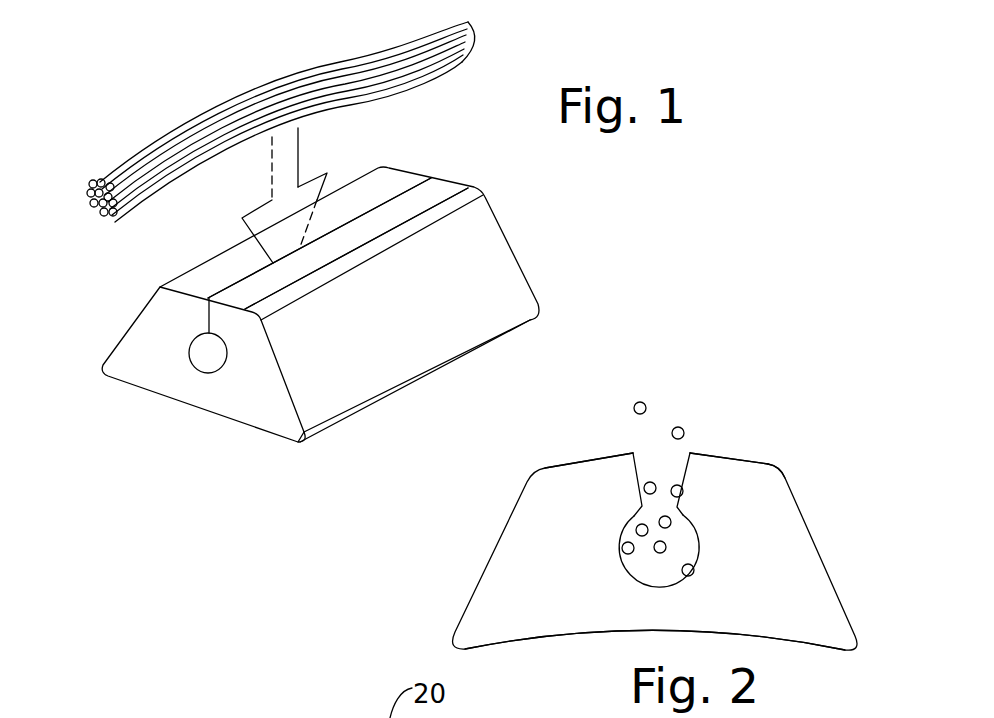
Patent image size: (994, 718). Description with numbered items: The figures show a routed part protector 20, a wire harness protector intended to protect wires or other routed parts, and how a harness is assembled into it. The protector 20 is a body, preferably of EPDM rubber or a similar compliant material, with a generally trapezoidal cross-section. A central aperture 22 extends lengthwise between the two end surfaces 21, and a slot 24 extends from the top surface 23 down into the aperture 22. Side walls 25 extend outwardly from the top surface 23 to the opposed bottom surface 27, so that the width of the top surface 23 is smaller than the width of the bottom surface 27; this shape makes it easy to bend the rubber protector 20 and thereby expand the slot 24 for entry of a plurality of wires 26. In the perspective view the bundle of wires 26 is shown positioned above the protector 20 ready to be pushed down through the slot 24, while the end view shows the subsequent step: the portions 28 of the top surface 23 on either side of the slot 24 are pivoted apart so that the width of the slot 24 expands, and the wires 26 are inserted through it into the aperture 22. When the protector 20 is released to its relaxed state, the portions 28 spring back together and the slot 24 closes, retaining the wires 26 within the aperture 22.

In FIG. 1, the routed part protector 20 is at (584, 186).
In FIG. 2, the routed part protector 20 is at (510, 479).
In FIG. 1, the end surfaces 21 is at (517, 254).
In FIG. 2, the end surfaces 21 is at (797, 551).
In FIG. 1, the central aperture 22 is at (207, 353).
In FIG. 2, the central aperture 22 is at (660, 548).
In FIG. 1, the top surface 23 is at (367, 197).
In FIG. 2, the top surface 23 is at (764, 458).
In FIG. 1, the slot 24 is at (207, 323).
In FIG. 2, the slot 24 is at (650, 472).
In FIG. 1, the side walls 25 is at (370, 370).
In FIG. 1, the wires 26 is at (465, 60).
In FIG. 2, the wires 26 is at (679, 427).
In FIG. 1, the bottom surface 27 is at (312, 441).
In FIG. 2, the bottom surface 27 is at (530, 637).
In FIG. 2, the portions of the top surface 28 is at (574, 464).